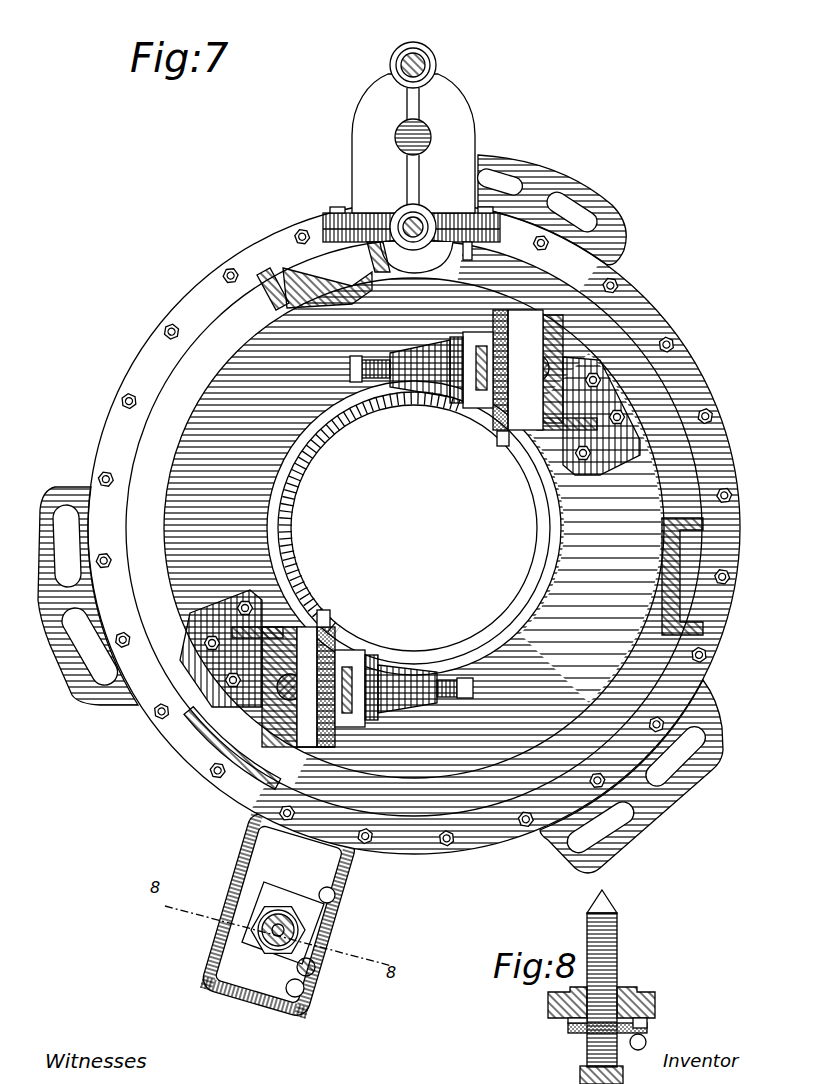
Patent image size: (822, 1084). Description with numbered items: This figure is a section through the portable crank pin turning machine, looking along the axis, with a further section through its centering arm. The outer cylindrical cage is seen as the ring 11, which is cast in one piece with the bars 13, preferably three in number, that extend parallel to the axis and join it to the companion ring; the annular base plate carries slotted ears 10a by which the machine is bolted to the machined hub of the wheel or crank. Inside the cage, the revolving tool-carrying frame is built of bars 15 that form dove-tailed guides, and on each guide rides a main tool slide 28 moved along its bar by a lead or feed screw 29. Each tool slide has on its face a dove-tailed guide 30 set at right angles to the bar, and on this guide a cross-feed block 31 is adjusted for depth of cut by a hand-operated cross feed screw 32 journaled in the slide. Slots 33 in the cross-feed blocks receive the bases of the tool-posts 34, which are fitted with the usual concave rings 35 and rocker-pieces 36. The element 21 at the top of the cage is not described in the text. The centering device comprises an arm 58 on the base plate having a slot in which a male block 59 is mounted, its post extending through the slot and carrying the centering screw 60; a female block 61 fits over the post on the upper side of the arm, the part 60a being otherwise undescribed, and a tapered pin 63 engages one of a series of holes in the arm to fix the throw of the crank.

In FIG. 7, the slotted ears 10a is at (548, 162).
In FIG. 7, the ring 11 is at (468, 812).
In FIG. 7, the bars 13 is at (286, 300).
In FIG. 7, the bars 15 is at (560, 372).
In FIG. 7, the suspension bracket 21 is at (425, 218).
In FIG. 7, the main tool slide 28 is at (518, 326).
In FIG. 7, the lead or feed screw 29 is at (566, 386).
In FIG. 7, the dove-tailed guide 30 is at (496, 314).
In FIG. 7, the cross-feed block 31 is at (472, 398).
In FIG. 7, the cross feed screw 32 is at (500, 442).
In FIG. 7, the slots 33 is at (345, 714).
In FIG. 7, the tool-posts 34 is at (432, 356).
In FIG. 7, the concave rings 35 is at (455, 405).
In FIG. 7, the rocker-pieces 36 is at (456, 352).
In FIG. 7, the arm 58 is at (348, 872).
In FIG. 8, the arm 58 is at (656, 1000).
In FIG. 8, the male block 59 is at (624, 988).
In FIG. 7, the centering screw 60 is at (312, 964).
In FIG. 8, the centering screw 60 is at (614, 933).
In FIG. 7, the nut 60a is at (258, 938).
In FIG. 8, the nut 60a is at (577, 1033).
In FIG. 7, the female block 61 is at (262, 895).
In FIG. 8, the female block 61 is at (568, 1026).
In FIG. 7, the tapered pin 63 is at (312, 975).
In FIG. 8, the tapered pin 63 is at (648, 1035).